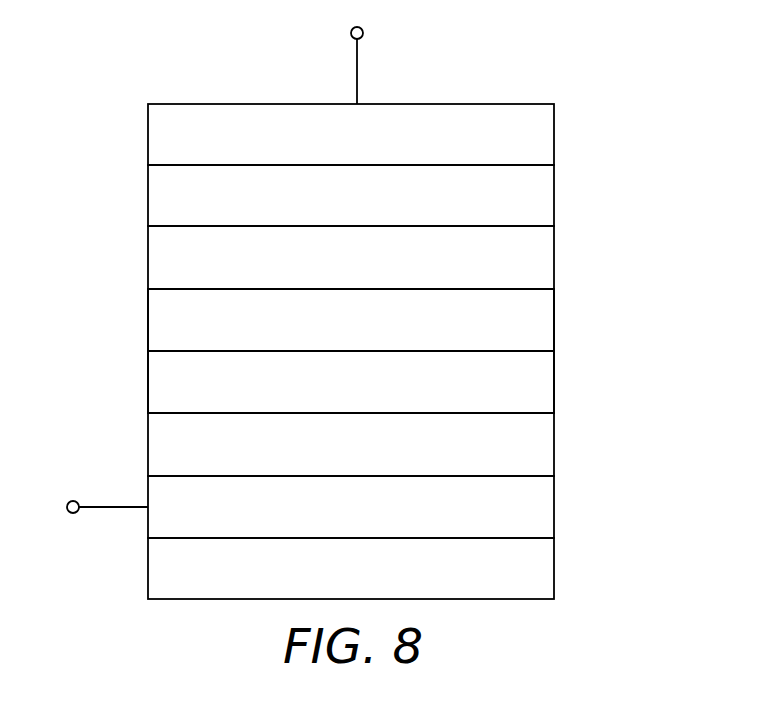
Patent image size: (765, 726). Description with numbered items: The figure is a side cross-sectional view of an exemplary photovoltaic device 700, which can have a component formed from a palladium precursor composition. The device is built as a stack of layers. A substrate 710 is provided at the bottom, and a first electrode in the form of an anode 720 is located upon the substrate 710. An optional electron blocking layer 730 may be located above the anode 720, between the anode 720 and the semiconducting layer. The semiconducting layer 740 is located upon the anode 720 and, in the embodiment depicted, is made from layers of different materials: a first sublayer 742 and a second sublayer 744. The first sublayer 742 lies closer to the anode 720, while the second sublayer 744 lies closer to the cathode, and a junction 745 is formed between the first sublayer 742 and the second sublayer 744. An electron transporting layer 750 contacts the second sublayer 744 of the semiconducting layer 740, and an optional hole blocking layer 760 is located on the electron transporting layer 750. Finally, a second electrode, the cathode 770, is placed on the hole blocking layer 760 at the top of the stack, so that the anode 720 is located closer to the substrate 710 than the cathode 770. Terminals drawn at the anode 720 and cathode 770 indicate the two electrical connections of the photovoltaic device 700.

The photovoltaic device 700 is at (556, 72).
The cathode 770 is at (555, 137).
The hole blocking layer 760 is at (555, 200).
The electron transporting layer 750 is at (555, 255).
The semiconducting layer 740 is at (355, 353).
The second sublayer 744 is at (555, 311).
The junction 745 is at (555, 351).
The first sublayer 742 is at (555, 395).
The electron blocking layer 730 is at (555, 448).
The anode 720 is at (555, 510).
The substrate 710 is at (555, 570).